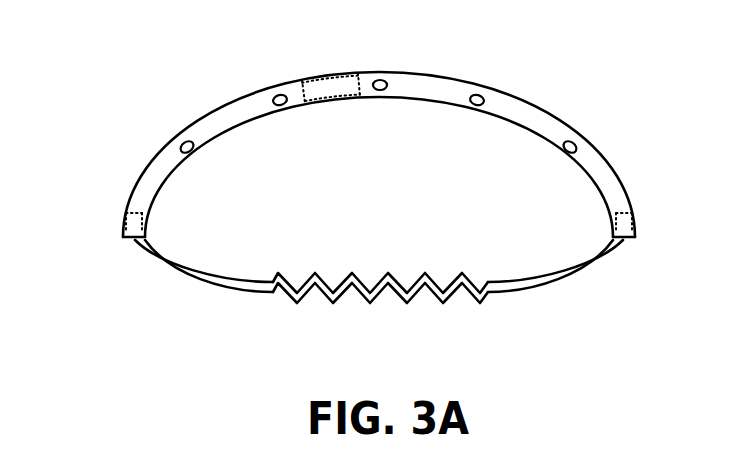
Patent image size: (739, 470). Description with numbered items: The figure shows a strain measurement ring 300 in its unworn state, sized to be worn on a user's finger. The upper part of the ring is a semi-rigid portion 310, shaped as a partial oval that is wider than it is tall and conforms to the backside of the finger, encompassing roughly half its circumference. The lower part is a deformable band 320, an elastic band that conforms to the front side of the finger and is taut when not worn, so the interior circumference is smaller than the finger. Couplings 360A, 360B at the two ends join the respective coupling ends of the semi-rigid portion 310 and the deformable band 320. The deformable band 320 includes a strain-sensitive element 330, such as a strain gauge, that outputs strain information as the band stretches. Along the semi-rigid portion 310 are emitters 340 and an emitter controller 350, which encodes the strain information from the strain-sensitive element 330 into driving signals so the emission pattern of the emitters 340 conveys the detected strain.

The strain measurement ring 300 is at (80, 72).
The semi-rigid portion 310 is at (226, 108).
The deformable band 320 is at (165, 271).
The strain-sensitive element 330 is at (297, 304).
The emitters 340 is at (480, 95).
The emitter controller 350 is at (321, 79).
The coupling 360A is at (128, 222).
The coupling 360B is at (636, 218).